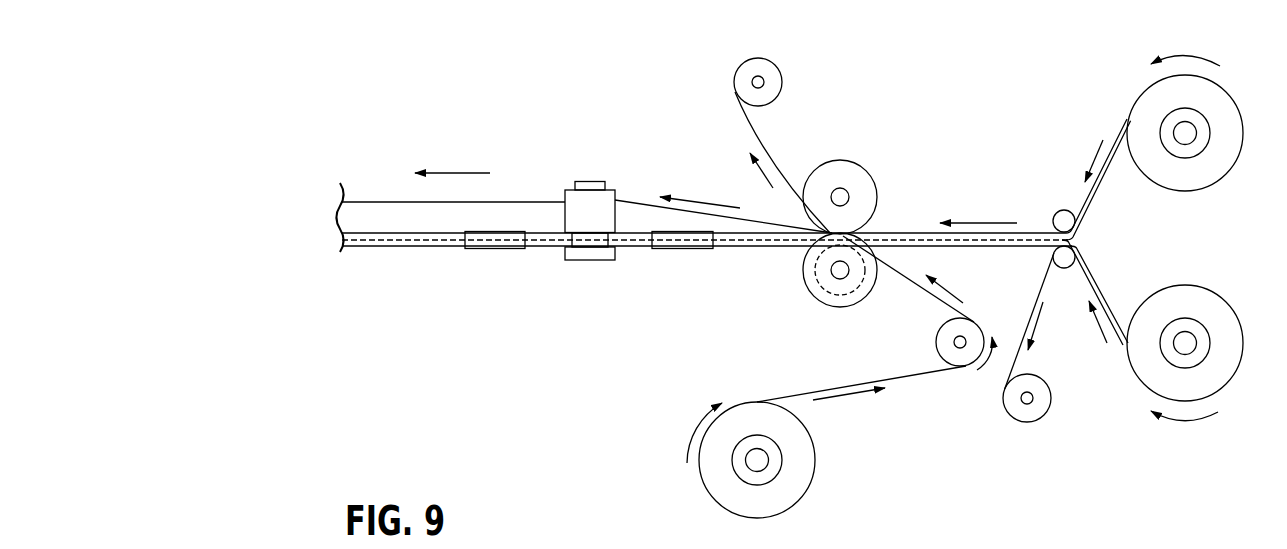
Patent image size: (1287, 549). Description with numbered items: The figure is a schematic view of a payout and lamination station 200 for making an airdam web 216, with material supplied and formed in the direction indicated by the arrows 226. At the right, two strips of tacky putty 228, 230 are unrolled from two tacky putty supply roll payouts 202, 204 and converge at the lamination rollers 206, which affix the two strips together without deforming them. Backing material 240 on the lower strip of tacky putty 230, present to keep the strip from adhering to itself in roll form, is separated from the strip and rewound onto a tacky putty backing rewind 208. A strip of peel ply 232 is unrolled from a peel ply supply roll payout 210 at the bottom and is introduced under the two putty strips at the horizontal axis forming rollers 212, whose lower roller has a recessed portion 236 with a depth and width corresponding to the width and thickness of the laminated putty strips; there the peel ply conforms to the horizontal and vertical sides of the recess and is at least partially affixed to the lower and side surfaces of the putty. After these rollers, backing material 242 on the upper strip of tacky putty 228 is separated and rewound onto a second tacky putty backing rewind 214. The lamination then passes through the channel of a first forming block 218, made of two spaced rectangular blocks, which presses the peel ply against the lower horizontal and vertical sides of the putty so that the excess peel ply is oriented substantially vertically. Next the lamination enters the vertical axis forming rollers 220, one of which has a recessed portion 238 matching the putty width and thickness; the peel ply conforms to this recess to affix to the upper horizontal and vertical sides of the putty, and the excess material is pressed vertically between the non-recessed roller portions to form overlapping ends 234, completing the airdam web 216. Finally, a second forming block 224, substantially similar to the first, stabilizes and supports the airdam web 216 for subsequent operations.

The payout and lamination station 200 is at (423, 99).
The tacky putty supply roll payout 202 is at (1237, 163).
The tacky putty supply roll payout 204 is at (1217, 292).
The lamination rollers 206 is at (1052, 207).
The tacky putty backing rewind 208 is at (1052, 402).
The peel ply supply roll payout 210 is at (817, 453).
The horizontal axis forming rollers 212 is at (881, 182).
The tacky putty backing rewind 214 is at (782, 68).
The airdam web 216 is at (409, 255).
The forming block 218 is at (672, 249).
The vertical axis forming rollers 220 is at (611, 186).
The forming block 224 is at (475, 250).
The arrows 226 is at (457, 173).
The strip of tacky putty 228 is at (1100, 200).
The strip of tacky putty 230 is at (1098, 272).
The strip of peel ply 232 is at (905, 278).
The overlapping ends 234 is at (527, 208).
The recessed portion 236 is at (822, 287).
The recessed portion 238 is at (608, 236).
The backing material 240 is at (1010, 367).
The backing material 242 is at (740, 110).